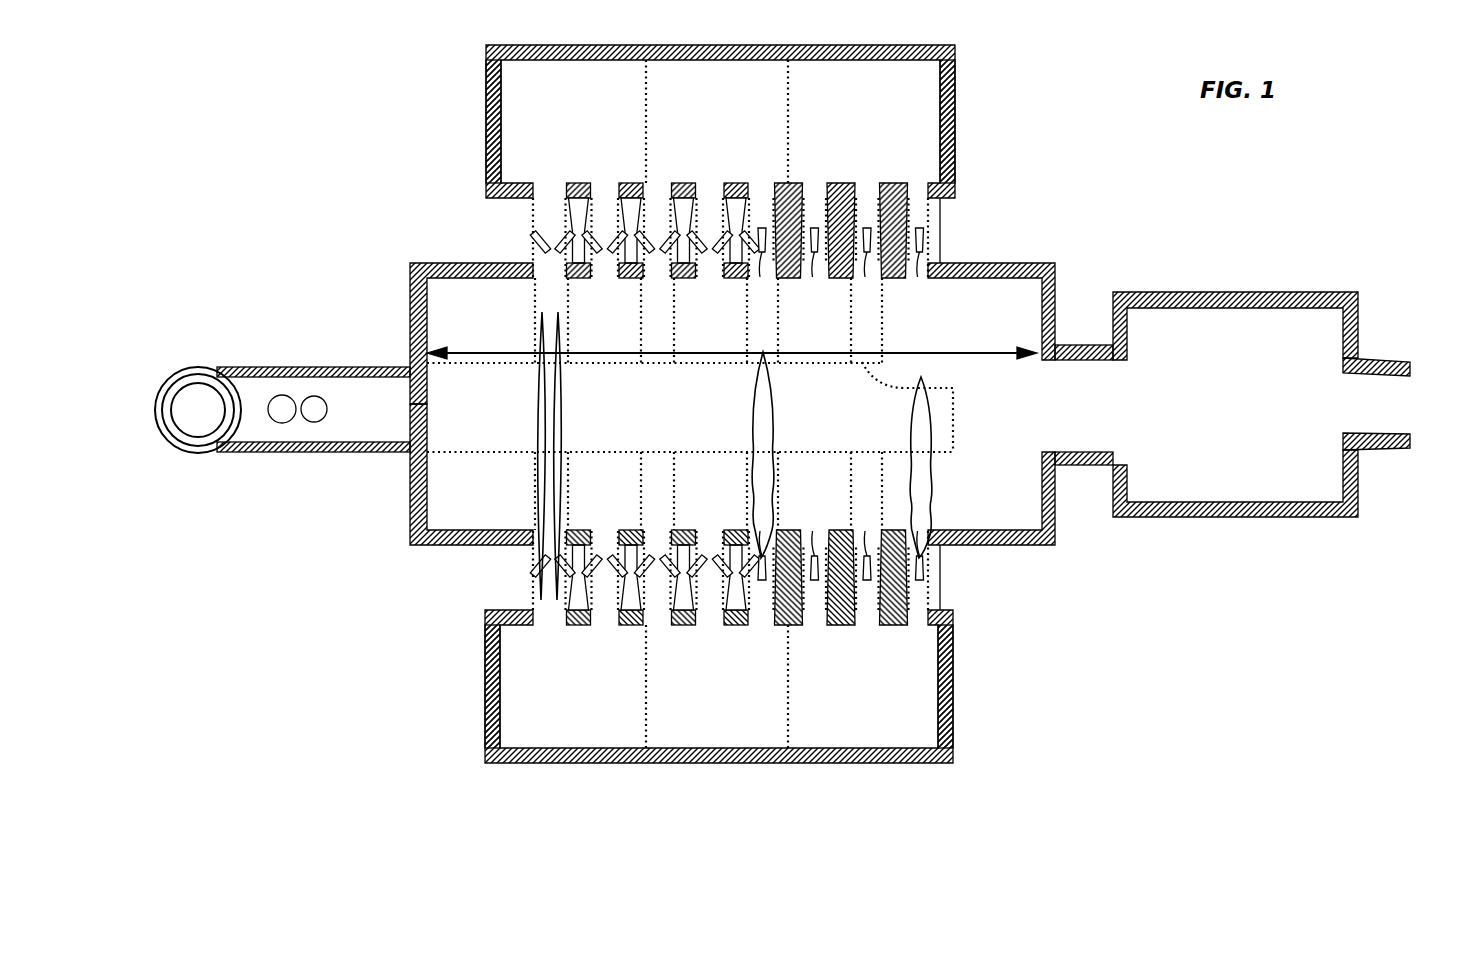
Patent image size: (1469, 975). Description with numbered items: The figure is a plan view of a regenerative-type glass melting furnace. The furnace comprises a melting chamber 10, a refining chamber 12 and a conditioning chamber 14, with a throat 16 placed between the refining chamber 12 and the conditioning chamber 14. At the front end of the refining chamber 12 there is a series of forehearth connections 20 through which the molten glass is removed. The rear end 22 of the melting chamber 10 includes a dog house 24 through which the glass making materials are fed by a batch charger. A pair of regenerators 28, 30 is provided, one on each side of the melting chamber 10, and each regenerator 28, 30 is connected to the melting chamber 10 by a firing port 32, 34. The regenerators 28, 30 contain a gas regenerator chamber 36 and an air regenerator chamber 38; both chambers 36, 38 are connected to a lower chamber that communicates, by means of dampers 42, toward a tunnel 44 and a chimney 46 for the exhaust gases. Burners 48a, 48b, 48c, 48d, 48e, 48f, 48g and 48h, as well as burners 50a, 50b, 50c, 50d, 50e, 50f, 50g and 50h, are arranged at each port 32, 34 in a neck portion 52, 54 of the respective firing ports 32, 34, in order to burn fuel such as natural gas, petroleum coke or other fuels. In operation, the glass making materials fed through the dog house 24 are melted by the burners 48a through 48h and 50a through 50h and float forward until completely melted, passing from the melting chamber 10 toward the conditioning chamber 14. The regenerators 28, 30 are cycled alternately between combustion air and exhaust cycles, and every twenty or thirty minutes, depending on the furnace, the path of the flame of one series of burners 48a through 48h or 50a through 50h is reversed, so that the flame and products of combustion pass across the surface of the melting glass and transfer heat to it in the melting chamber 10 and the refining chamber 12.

The melting chamber 10 is at (792, 404).
The refining chamber 12 is at (1025, 540).
The conditioning chamber 14 is at (1240, 460).
The throat 16 is at (1080, 435).
The forehearth connections 20 is at (1380, 356).
The rear end 22 is at (410, 490).
The dog house 24 is at (430, 302).
The regenerator 28 is at (955, 50).
The regenerator 30 is at (953, 680).
The firing port 32 is at (553, 195).
The firing port 34 is at (550, 608).
The gas regenerator chamber 36 is at (882, 148).
The air regenerator chamber 38 is at (920, 112).
The dampers 42 is at (955, 388).
The tunnel 44 is at (326, 400).
The chimney 46 is at (192, 400).
The burner 48a is at (538, 240).
The burner 48b is at (601, 265).
The burner 48c is at (658, 265).
The burner 48d is at (707, 265).
The burner 48e is at (752, 270).
The burner 48f is at (812, 262).
The burner 48g is at (865, 265).
The burner 48h is at (938, 242).
The burner 50a is at (535, 562).
The burner 50b is at (599, 548).
The burner 50c is at (655, 545).
The burner 50d is at (710, 548).
The burner 50e is at (780, 525).
The burner 50f is at (815, 548).
The burner 50g is at (862, 545).
The burner 50h is at (935, 576).
The neck portion 52 is at (548, 282).
The neck portion 54 is at (537, 597).